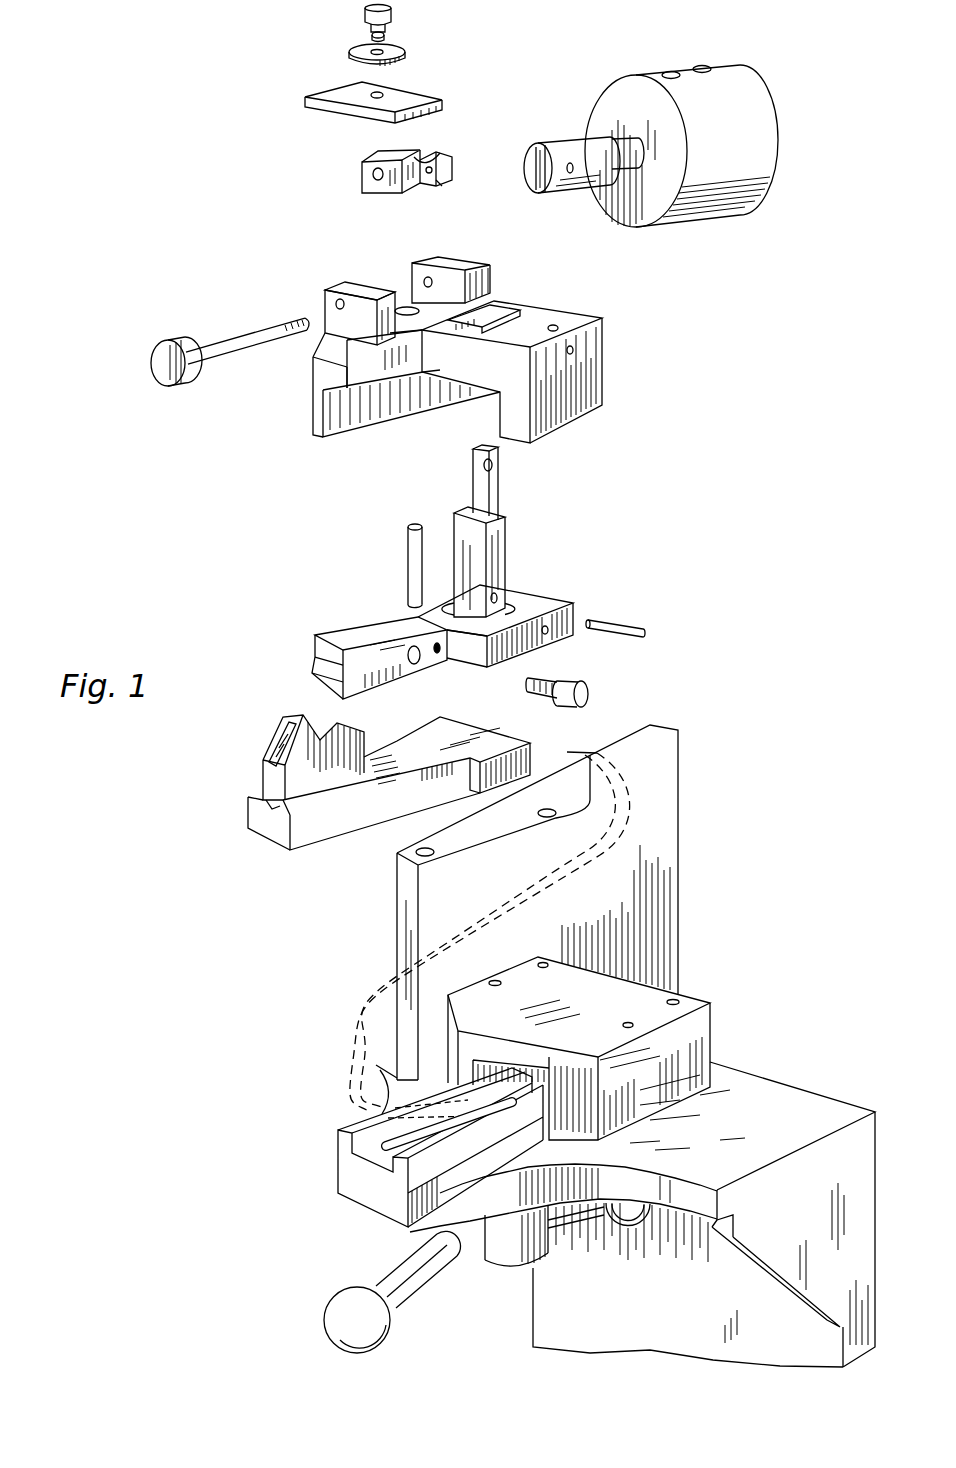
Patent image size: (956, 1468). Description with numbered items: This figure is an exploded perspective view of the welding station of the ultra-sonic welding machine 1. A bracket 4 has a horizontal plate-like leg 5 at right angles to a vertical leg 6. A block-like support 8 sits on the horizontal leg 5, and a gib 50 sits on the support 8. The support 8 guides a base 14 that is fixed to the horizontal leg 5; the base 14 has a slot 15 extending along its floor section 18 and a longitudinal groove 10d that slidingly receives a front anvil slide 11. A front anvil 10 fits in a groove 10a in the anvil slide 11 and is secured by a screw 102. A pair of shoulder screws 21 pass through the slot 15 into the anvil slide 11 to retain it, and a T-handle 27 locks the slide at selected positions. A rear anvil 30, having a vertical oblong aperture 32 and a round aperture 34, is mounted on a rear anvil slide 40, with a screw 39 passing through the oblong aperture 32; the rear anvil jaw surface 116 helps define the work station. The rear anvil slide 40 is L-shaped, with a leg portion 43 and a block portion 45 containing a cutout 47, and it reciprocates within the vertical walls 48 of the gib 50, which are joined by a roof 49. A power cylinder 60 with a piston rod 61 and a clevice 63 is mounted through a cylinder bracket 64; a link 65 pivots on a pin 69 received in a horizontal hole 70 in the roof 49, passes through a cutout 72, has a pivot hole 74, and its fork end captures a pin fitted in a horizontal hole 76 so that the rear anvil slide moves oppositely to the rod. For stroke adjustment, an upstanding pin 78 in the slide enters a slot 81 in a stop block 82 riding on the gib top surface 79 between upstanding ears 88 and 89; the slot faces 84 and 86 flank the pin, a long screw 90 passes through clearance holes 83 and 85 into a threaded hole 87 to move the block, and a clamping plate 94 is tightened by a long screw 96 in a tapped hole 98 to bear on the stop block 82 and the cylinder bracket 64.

The ultra-sonic welding machine 1 is at (254, 870).
The bracket 4 is at (712, 1223).
The horizontal plate-like leg 5 is at (797, 1095).
The vertical leg 6 is at (672, 1302).
The block-like support 8 is at (596, 1048).
The front anvil 10 is at (356, 785).
The groove 10a is at (266, 810).
The longitudinal groove 10d is at (356, 1141).
The front anvil slide 11 is at (347, 812).
The base 14 is at (406, 1147).
The slot 15 is at (405, 1145).
The floor section 18 is at (372, 1157).
The shoulder screws 21 is at (543, 968).
The T-handle 27 is at (493, 1252).
The rear anvil 30 is at (353, 663).
The vertical oblong aperture 32 is at (410, 664).
The round aperture 34 is at (438, 655).
The screw 39 is at (560, 683).
The rear anvil slide 40 is at (489, 612).
The leg portion 43 is at (377, 614).
The block portion 45 is at (548, 604).
The cutout 47 is at (511, 600).
The vertical walls 48 is at (328, 403).
The roof 49 is at (478, 366).
The gib 50 is at (465, 334).
The power cylinder 60 is at (730, 124).
The piston rod 61 is at (625, 142).
The clevice 63 is at (572, 143).
The cylinder bracket 64 is at (647, 855).
The link 65 is at (462, 532).
The pin 69 is at (638, 627).
The horizontal hole 70 is at (574, 350).
The cutout 72 is at (505, 310).
The pivot hole 74 is at (496, 594).
The horizontal hole 76 is at (548, 630).
The upstanding pin 78 is at (408, 541).
The gib top surface 79 is at (556, 318).
The slot 81 is at (440, 184).
The stop block 82 is at (369, 160).
The clearance hole 83 is at (338, 303).
The face 84 is at (405, 156).
The clearance hole 85 is at (430, 280).
The face 86 is at (431, 156).
The threaded hole 87 is at (447, 170).
The upstanding ear 88 is at (340, 322).
The upstanding ear 89 is at (470, 265).
The long screw 90 is at (150, 362).
The clamping plate 94 is at (418, 94).
The long screw 96 is at (365, 13).
The tapped hole 98 is at (511, 968).
The screw 102 is at (273, 732).
The rear anvil jaw surface 116 is at (318, 680).